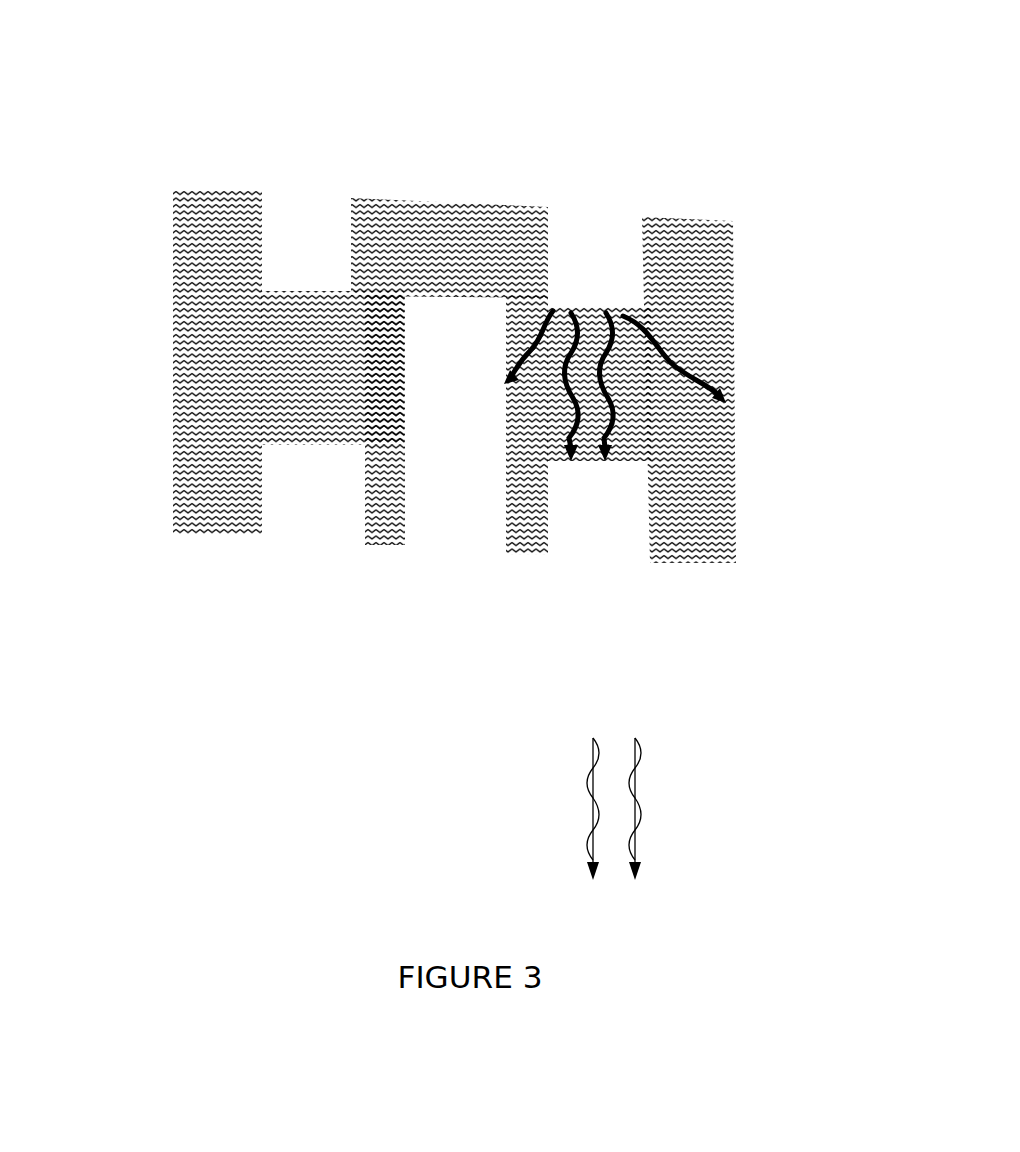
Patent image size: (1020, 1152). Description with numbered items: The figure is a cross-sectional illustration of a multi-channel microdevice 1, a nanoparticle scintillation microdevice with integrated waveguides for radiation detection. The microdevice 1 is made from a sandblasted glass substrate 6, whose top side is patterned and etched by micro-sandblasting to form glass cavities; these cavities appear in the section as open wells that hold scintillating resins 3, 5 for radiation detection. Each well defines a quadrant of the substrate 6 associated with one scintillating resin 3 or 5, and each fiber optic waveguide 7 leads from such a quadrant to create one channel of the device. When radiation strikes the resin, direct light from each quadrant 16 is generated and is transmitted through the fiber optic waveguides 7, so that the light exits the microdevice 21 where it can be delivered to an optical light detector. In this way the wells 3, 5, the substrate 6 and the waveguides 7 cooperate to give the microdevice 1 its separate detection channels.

The multi-channel microdevice 1 is at (788, 322).
The open well for scintillating resin 3 is at (299, 205).
The open well for scintillating resin 5 is at (582, 210).
The glass substrate 6 is at (61, 429).
The fiber optic waveguide 7 is at (288, 590).
The direct light from each quadrant 16 is at (613, 374).
The light exiting the microdevice 21 is at (648, 753).